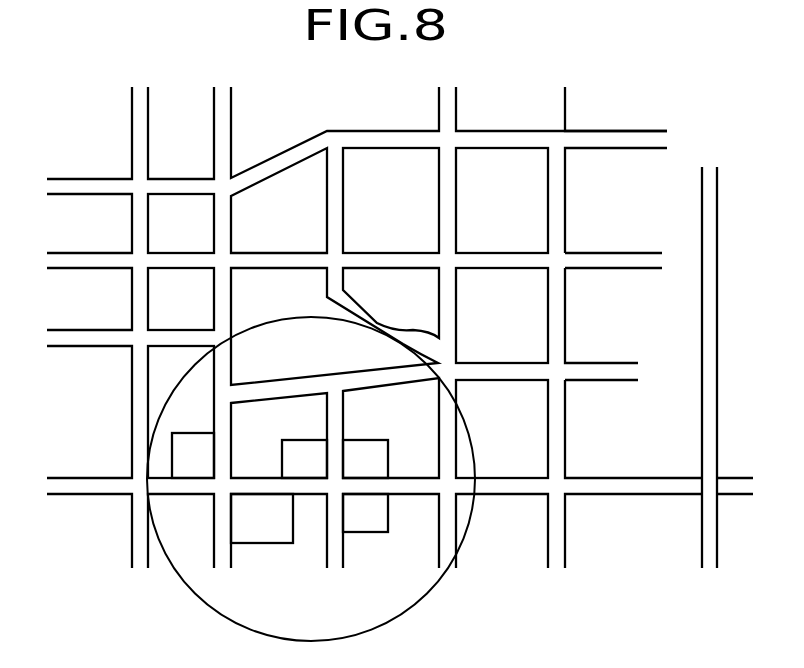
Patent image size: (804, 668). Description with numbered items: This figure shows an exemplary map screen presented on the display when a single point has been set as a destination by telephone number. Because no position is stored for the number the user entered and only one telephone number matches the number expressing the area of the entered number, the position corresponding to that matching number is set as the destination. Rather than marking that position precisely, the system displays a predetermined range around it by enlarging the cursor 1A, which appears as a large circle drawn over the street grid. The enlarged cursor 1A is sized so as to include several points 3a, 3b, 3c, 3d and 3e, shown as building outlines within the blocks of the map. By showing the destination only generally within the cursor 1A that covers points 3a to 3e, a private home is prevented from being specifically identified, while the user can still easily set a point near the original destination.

The cursor 1A is at (202, 597).
The point 3a is at (193, 433).
The point 3b is at (291, 440).
The point 3c is at (368, 440).
The point 3d is at (367, 533).
The point 3e is at (263, 543).